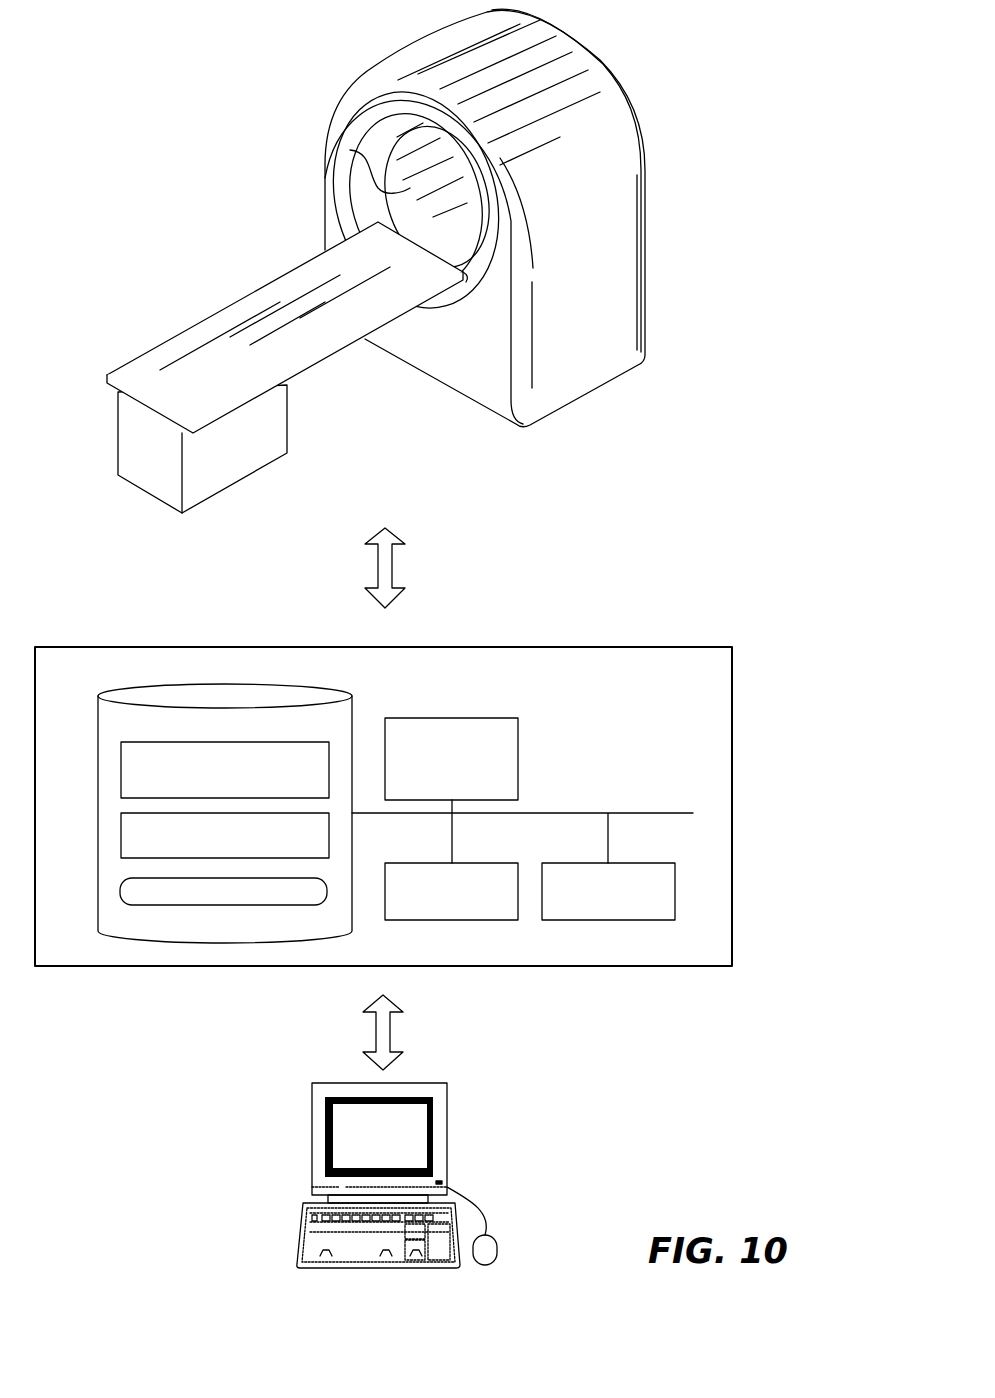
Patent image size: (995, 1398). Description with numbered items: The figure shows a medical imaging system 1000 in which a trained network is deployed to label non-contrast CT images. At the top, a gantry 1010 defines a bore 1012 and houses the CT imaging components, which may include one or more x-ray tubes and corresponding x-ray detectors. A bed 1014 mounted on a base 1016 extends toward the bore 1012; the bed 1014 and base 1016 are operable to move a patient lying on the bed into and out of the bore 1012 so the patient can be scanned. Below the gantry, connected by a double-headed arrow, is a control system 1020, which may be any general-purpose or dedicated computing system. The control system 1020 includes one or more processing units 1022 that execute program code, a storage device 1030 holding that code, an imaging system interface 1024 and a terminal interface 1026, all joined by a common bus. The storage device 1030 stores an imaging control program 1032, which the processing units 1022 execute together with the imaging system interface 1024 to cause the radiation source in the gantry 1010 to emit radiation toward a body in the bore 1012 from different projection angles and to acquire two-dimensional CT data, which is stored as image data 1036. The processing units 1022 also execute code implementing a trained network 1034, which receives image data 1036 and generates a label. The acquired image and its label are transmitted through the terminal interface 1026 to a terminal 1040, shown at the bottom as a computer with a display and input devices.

The medical imaging system 1000 is at (215, 44).
The gantry 1010 is at (396, 62).
The bore 1012 is at (350, 150).
The bed 1014 is at (203, 330).
The base 1016 is at (280, 430).
The control system 1020 is at (702, 682).
The processing units 1022 is at (490, 868).
The imaging system interface 1024 is at (477, 724).
The terminal interface 1026 is at (635, 868).
The storage device 1030 is at (318, 697).
The imaging control program 1032 is at (118, 770).
The trained network 1034 is at (118, 832).
The image data 1036 is at (118, 890).
The terminal 1040 is at (495, 1135).